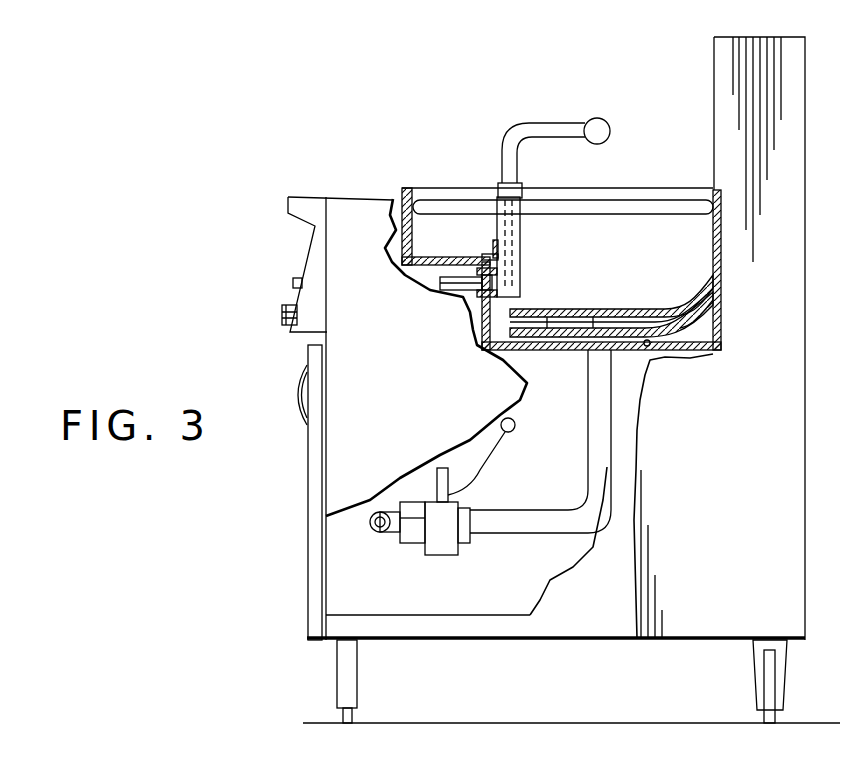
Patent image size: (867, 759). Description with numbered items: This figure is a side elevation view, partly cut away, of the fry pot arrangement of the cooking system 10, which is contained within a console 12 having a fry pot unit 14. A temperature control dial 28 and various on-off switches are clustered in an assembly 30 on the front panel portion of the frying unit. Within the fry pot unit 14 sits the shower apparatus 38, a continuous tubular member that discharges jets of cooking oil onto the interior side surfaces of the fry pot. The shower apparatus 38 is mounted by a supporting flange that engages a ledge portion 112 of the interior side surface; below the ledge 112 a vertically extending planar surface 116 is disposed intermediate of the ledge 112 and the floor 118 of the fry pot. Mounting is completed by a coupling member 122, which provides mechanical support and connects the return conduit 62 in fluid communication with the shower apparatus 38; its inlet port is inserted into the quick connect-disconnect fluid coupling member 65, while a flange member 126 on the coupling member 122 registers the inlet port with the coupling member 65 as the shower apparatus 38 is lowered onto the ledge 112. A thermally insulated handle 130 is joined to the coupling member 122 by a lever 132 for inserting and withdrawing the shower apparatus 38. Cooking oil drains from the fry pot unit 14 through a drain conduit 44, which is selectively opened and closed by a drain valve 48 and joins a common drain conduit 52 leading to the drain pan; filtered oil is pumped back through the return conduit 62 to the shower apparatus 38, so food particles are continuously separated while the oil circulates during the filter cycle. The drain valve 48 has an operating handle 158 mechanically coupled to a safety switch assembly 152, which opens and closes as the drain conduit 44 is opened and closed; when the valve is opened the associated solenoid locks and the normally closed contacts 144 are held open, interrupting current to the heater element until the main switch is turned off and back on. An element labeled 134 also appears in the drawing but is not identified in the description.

The cooking system 10 is at (535, 81).
The console 12 is at (712, 37).
The fry pot unit 14 is at (640, 188).
The temperature control dial 28 is at (282, 317).
The assembly 30 is at (293, 283).
The shower apparatus 38 is at (440, 197).
The drain conduit 44 is at (600, 468).
The drain valve 48 is at (412, 527).
The common drain conduit 52 is at (370, 524).
The return conduit 62 is at (452, 289).
The quick connect-disconnect fluid coupling member 65 is at (482, 292).
The ledge portion 112 is at (430, 256).
The vertically extending planar surface 116 is at (486, 340).
The floor 118 is at (650, 350).
The coupling member 122 is at (502, 183).
The flange member 126 is at (490, 254).
The thermally insulated handle 130 is at (611, 133).
The lever 132 is at (518, 126).
The curved conduit 134 is at (700, 325).
The normally closed contacts 144 is at (412, 228).
The safety switch assembly 152 is at (445, 545).
The operating handle 158 is at (437, 480).